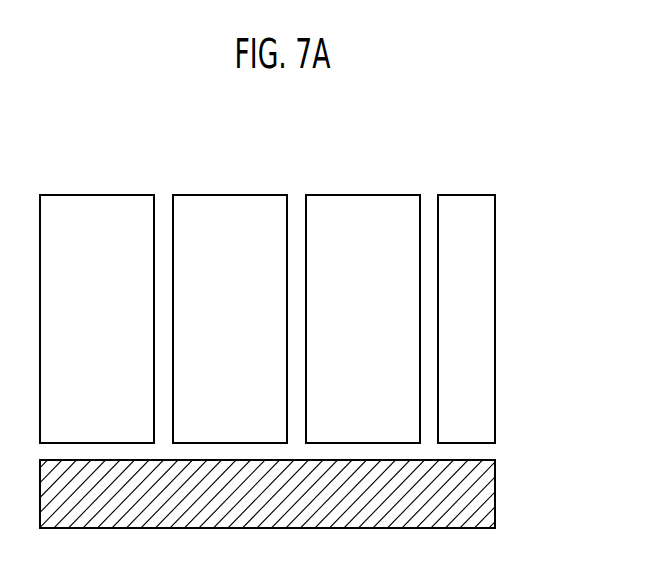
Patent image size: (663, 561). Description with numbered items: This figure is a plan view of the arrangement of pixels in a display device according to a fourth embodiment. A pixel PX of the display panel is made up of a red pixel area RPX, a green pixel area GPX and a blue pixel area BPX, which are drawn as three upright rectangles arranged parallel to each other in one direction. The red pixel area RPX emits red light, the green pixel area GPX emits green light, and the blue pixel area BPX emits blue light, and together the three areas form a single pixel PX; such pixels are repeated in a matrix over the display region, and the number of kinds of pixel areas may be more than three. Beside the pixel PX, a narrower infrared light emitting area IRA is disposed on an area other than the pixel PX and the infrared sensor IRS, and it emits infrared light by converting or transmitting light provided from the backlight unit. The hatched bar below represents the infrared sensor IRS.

The pixel PX is at (370, 128).
The red pixel area RPX is at (83, 205).
The green pixel area GPX is at (219, 205).
The blue pixel area BPX is at (362, 205).
The infrared light emitting area IRA is at (473, 205).
The infrared sensor IRS is at (489, 490).